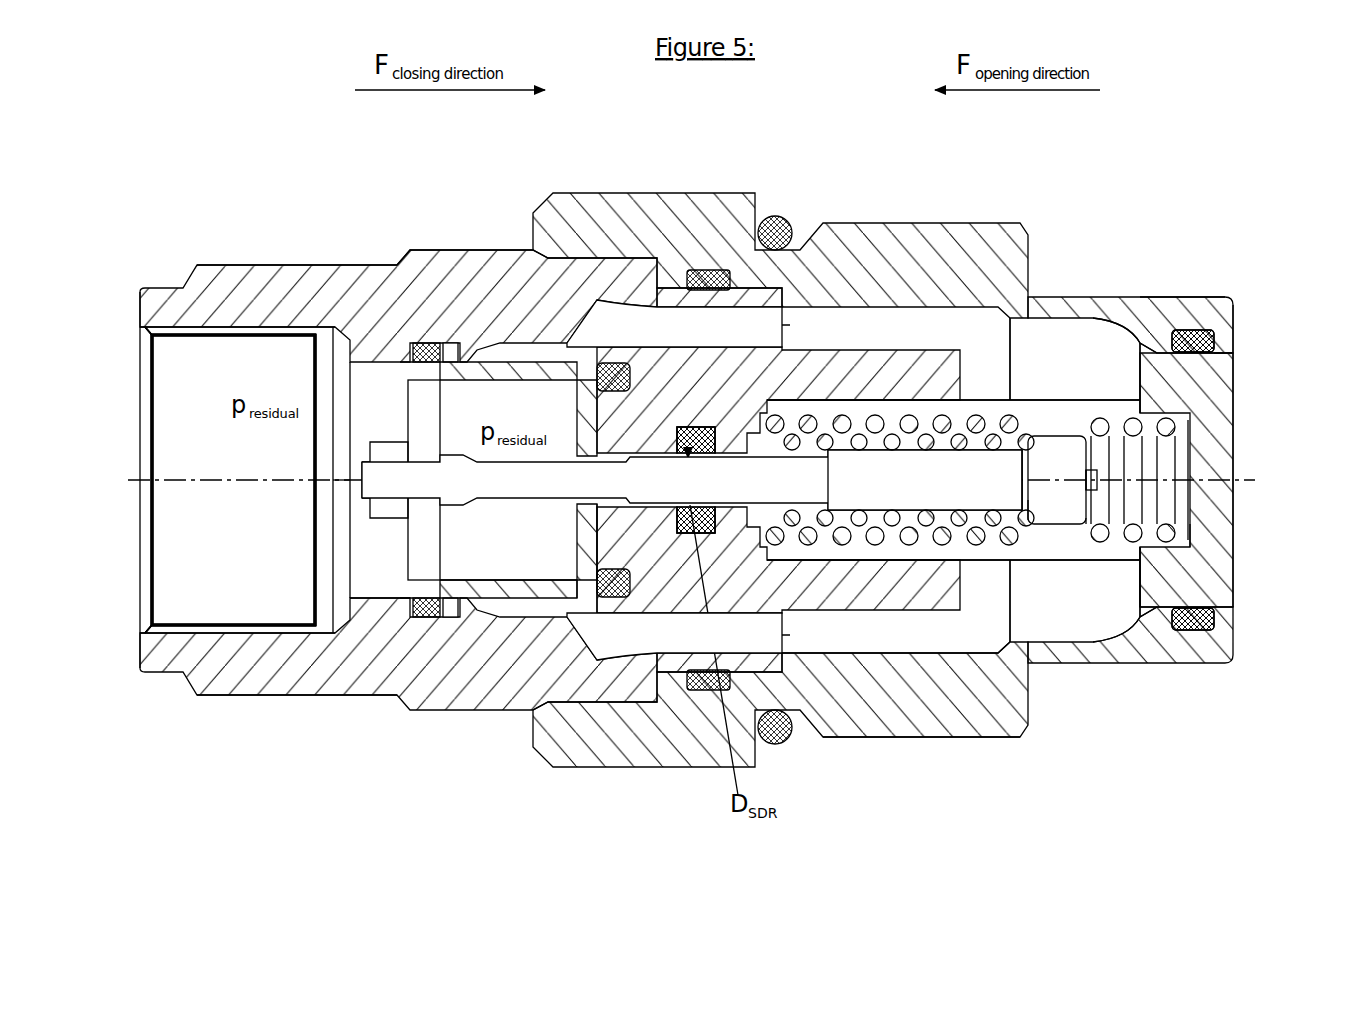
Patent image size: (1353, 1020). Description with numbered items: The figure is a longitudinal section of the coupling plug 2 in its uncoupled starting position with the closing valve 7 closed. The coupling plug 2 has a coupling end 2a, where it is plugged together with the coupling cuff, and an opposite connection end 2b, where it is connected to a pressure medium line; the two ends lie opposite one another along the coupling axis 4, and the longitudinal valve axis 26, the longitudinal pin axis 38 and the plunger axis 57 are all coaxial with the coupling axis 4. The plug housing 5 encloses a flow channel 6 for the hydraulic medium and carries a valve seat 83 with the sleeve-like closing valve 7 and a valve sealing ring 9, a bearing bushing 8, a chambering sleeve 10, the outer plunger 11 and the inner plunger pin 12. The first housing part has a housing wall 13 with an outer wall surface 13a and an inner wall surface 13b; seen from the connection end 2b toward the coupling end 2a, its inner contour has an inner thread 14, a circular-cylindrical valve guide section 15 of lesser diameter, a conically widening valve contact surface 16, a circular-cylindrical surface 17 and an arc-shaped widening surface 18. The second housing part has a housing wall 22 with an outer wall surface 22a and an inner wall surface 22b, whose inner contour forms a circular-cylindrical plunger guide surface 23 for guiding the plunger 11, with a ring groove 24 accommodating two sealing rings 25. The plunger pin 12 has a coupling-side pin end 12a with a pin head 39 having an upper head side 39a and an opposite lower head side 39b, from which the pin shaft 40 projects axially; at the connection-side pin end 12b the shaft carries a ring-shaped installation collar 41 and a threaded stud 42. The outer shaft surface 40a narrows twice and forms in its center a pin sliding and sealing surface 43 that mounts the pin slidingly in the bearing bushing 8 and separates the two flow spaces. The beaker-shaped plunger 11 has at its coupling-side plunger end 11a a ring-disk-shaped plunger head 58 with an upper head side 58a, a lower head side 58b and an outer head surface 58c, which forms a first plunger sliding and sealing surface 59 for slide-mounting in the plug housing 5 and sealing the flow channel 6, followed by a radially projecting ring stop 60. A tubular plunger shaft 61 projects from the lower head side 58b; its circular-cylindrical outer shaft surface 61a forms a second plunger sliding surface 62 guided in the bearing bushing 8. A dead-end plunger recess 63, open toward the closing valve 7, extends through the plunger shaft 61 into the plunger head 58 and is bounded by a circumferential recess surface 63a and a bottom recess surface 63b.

The coupling plug 2 is at (352, 126).
The coupling end 2a is at (1254, 412).
The connection end 2b is at (121, 392).
The coupling axis 4 is at (207, 483).
The longitudinal valve axis 26 is at (230, 480).
The longitudinal pin axis 38 is at (230, 480).
The plunger axis 57 is at (230, 480).
The plug housing 5 is at (247, 300).
The flow channel 6 is at (200, 420).
The closing valve 7 is at (548, 362).
The bearing bushing 8 is at (845, 385).
The valve sealing ring 9 is at (648, 562).
The chambering sleeve 10 is at (643, 455).
The outer plunger 11 is at (1060, 413).
The coupling-side plunger end 11a is at (1278, 436).
The plunger pin 12 is at (908, 470).
The coupling-side pin end 12a is at (1112, 457).
The connection-side pin end 12b is at (342, 472).
The housing wall 13 is at (263, 662).
The outer wall surface 13a is at (322, 700).
The inner wall surface 13b is at (224, 618).
The inner thread 14 is at (273, 333).
The valve guide section 15 is at (389, 595).
The valve contact surface 16 is at (494, 603).
The circular-cylindrical surface 17 is at (528, 613).
The arc-shaped widening surface 18 is at (591, 637).
The housing wall 22 is at (692, 232).
The outer wall surface 22a is at (833, 742).
The inner wall surface 22b is at (828, 650).
The plunger guide surface 23 is at (1240, 578).
The ring groove 24 is at (1186, 330).
The sealing rings 25 is at (1218, 345).
The pin head 39 is at (1055, 493).
The upper head side 39a is at (1098, 495).
The lower head side 39b is at (975, 565).
The pin shaft 40 is at (772, 745).
The outer shaft surface 40a is at (734, 452).
The pin sliding and sealing surface 43 is at (696, 480).
The installation collar 41 is at (457, 437).
The threaded stud 42 is at (393, 440).
The plunger head 58 is at (1190, 578).
The upper head side 58a is at (1240, 540).
The lower head side 58b is at (1138, 584).
The outer head surface 58c is at (1228, 348).
The first plunger sliding and sealing surface 59 is at (1193, 480).
The ring stop 60 is at (1140, 617).
The plunger shaft 61 is at (982, 543).
The outer shaft surface 61a is at (1033, 395).
The second plunger sliding surface 62 is at (953, 480).
The plunger recess 63 is at (1078, 540).
The circumferential recess surface 63a is at (987, 470).
The bottom recess surface 63b is at (1183, 540).
The valve seat 83 is at (585, 325).